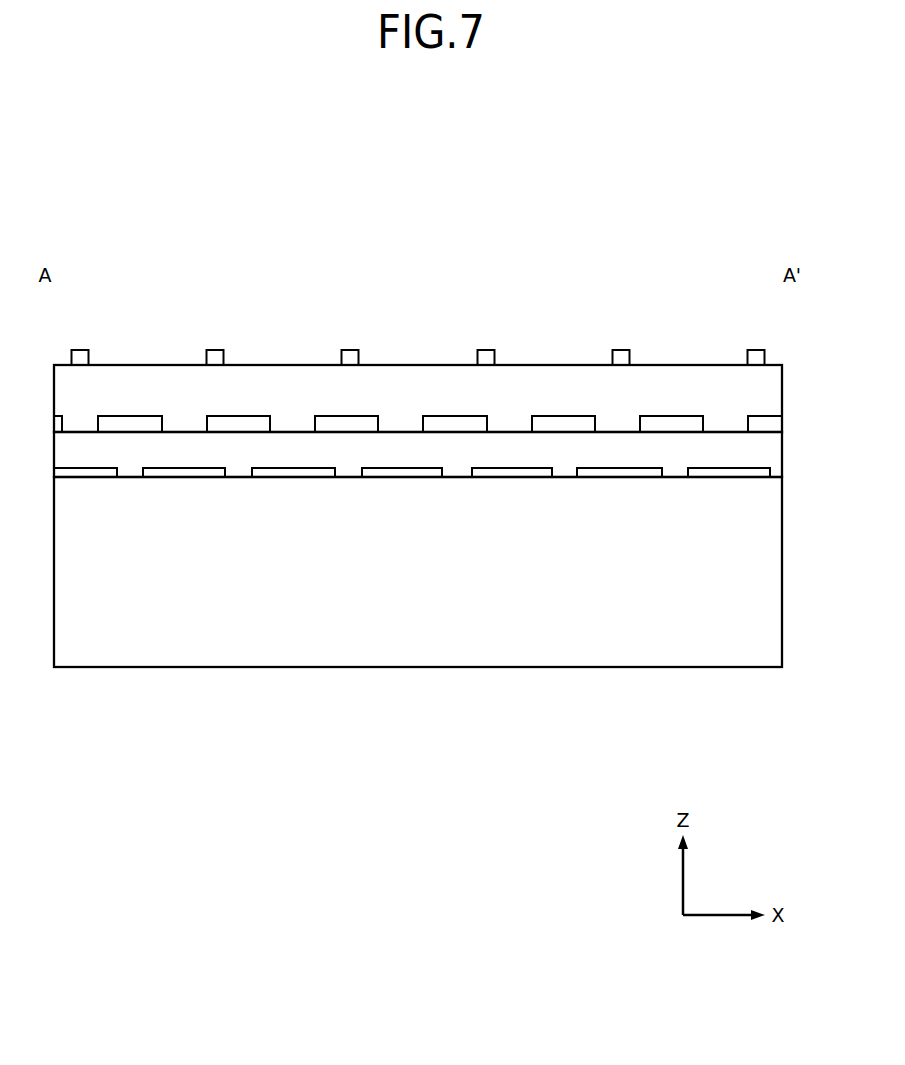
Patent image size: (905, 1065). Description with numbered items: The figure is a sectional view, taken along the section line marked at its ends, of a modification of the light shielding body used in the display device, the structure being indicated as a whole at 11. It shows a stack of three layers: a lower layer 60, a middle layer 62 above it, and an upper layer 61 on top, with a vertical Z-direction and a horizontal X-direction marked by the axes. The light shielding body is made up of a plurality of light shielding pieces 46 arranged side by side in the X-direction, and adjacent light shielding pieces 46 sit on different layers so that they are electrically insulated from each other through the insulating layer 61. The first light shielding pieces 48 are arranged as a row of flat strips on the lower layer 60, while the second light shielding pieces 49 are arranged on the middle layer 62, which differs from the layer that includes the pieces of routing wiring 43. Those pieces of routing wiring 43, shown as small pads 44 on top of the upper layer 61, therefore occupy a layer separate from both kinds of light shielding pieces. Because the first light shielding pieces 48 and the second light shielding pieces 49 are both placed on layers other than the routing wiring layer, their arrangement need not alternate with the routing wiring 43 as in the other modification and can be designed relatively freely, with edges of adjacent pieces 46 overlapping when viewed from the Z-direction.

The first base material 11 is at (689, 173).
The routing wiring 43 is at (418, 289).
The wiring pad of upper electrode 44 is at (756, 350).
The light shielding piece 46 is at (418, 480).
The first light shielding piece 48 is at (83, 477).
The second light shielding piece 49 is at (757, 415).
The layer 60 is at (770, 560).
The layer 61 is at (770, 400).
The layer 62 is at (770, 446).